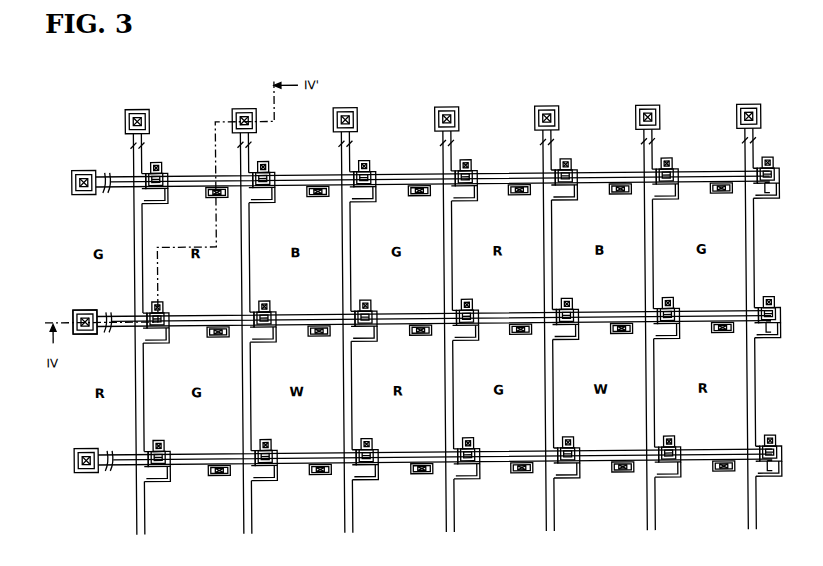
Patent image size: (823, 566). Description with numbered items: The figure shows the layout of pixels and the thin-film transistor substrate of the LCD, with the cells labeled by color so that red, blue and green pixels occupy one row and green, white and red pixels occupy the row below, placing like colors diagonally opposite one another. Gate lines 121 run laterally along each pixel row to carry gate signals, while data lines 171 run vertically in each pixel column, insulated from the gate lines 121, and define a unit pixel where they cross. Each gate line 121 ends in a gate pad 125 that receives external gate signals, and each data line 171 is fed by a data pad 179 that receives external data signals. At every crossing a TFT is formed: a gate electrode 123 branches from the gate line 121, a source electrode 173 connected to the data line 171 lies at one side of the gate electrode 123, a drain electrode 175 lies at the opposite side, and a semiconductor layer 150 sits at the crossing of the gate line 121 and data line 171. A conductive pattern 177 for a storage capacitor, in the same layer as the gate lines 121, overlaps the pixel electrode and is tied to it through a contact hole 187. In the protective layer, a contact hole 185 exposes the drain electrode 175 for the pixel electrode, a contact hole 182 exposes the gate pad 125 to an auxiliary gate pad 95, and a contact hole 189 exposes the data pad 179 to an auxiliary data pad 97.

The auxiliary gate pad 95 is at (94, 331).
The auxiliary data pad 97 is at (258, 138).
The gate line 121 is at (212, 197).
The gate electrode 123 is at (167, 188).
The gate pad 125 is at (74, 192).
The semiconductor layer 150 is at (146, 184).
The data line 171 is at (134, 236).
The source electrode 173 is at (152, 204).
The drain electrode 175 is at (157, 160).
The conductive pattern for a storage capacitor 177 is at (222, 197).
The data pad 179 is at (151, 113).
The contact hole 182 is at (84, 188).
The contact hole 185 is at (164, 172).
The contact hole 187 is at (215, 188).
The contact hole 189 is at (244, 115).